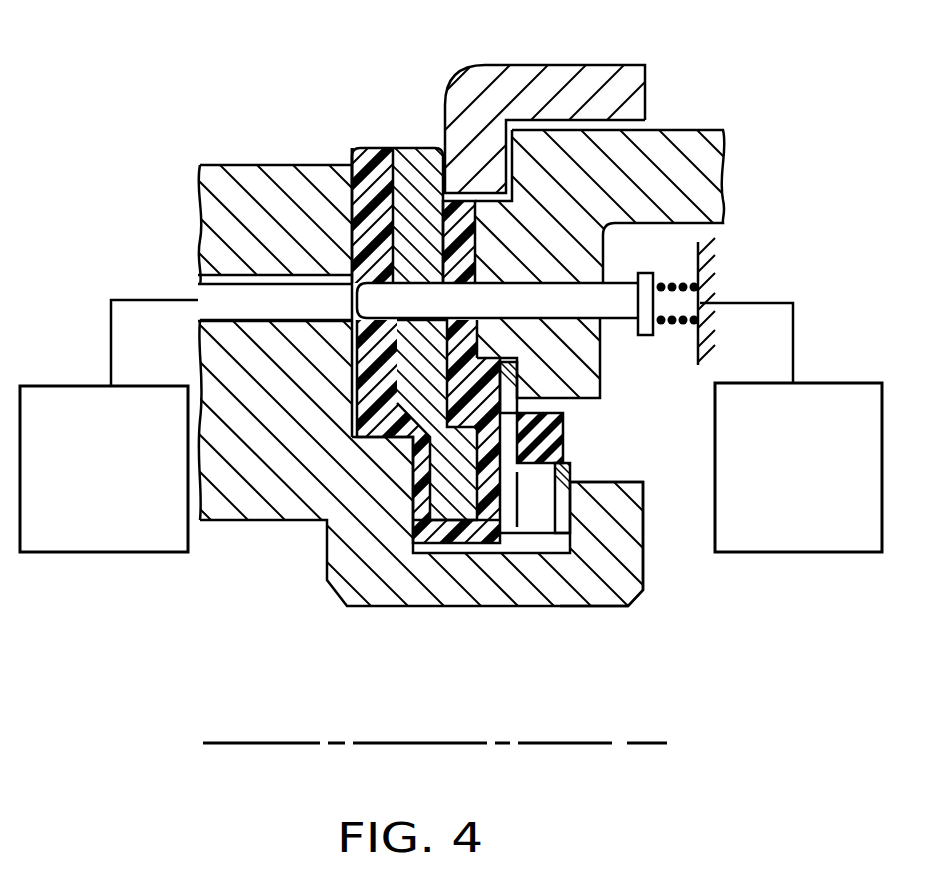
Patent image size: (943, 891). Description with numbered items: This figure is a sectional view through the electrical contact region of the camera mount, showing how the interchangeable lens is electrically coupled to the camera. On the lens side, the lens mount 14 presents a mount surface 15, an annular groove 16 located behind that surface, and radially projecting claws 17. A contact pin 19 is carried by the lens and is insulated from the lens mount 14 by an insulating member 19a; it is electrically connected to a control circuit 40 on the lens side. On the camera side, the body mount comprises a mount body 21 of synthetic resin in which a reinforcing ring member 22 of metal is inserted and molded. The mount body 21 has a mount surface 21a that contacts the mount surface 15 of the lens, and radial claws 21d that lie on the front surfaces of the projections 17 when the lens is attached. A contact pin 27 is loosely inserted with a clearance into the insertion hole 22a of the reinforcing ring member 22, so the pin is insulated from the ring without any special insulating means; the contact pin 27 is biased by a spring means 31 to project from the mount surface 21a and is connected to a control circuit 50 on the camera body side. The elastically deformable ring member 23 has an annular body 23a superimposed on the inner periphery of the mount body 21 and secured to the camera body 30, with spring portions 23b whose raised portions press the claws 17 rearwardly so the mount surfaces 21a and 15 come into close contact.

The lens mount 14 is at (572, 598).
The mount surface 15 is at (358, 443).
The annular groove 16 is at (534, 552).
The claws 17 is at (630, 523).
The contact pin 19 is at (213, 297).
The insulating member 19a is at (233, 278).
The mount body 21 is at (373, 158).
The mount surface 21a is at (352, 188).
The radial claws 21d is at (479, 546).
The reinforcing ring member 22 is at (419, 168).
The insertion hole 22a is at (433, 287).
The elastically deformable ring member 23 is at (534, 374).
The annular body 23a is at (575, 391).
The spring portions 23b is at (572, 474).
The contact pin 27 is at (624, 283).
The camera body 30 is at (717, 153).
The spring means 31 is at (700, 273).
The control circuit 40 is at (111, 553).
The control circuit 50 is at (800, 553).